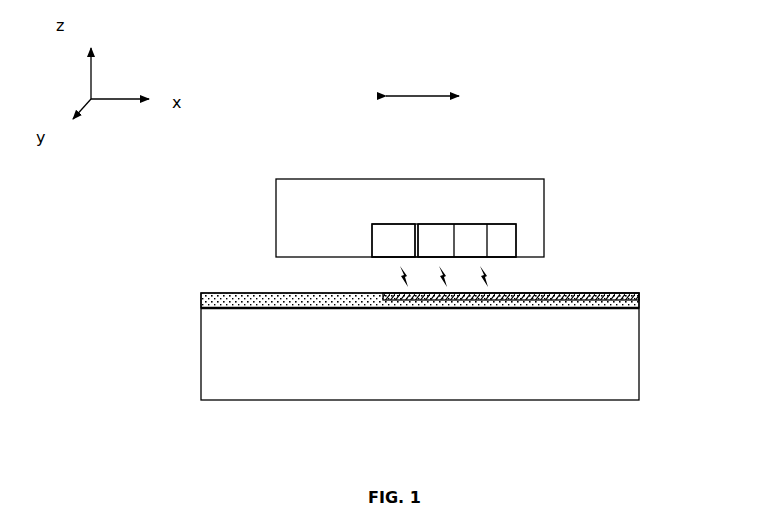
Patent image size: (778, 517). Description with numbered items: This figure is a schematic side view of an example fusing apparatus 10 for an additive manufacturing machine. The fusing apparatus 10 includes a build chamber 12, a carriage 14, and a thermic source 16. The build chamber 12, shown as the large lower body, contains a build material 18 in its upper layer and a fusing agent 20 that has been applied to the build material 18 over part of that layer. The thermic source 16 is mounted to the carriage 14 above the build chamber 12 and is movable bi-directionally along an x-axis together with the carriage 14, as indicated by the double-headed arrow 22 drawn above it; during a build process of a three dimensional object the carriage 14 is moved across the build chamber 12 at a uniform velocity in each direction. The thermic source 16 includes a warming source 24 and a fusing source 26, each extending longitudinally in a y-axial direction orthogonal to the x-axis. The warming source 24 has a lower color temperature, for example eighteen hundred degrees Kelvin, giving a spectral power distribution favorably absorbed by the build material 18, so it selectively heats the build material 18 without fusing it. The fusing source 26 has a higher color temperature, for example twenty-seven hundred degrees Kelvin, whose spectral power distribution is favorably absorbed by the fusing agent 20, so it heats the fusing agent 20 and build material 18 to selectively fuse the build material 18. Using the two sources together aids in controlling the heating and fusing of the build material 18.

The fusing apparatus 10 is at (617, 87).
The build chamber 12 is at (420, 365).
The carriage 14 is at (276, 212).
The thermic source 16 is at (516, 242).
The build material 18 is at (210, 300).
The fusing agent 20 is at (640, 295).
The arrow 22 is at (417, 88).
The warming source 24 is at (383, 224).
The fusing source 26 is at (428, 224).